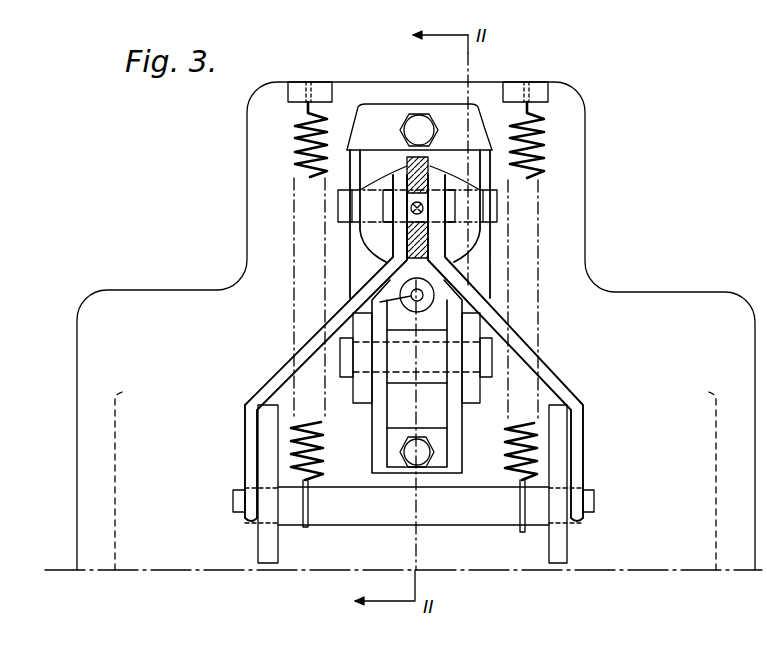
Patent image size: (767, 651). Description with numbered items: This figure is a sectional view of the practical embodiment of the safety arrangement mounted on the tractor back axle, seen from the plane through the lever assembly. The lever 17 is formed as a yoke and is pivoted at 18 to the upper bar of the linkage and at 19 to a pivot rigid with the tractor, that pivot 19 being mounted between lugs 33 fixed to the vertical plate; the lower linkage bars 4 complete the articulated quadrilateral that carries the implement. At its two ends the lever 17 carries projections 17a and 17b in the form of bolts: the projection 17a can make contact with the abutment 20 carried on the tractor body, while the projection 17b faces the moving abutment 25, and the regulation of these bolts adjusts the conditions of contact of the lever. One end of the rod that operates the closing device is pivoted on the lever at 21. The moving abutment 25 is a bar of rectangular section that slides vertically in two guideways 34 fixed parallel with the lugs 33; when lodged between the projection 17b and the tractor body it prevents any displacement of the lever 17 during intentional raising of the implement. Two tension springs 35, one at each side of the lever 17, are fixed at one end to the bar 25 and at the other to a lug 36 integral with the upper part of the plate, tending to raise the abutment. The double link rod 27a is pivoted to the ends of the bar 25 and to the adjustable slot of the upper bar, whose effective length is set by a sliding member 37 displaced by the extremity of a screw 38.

The lower linkage bars 4 is at (405, 172).
The lever 17 is at (352, 230).
The projection 17a is at (418, 118).
The projection 17b is at (430, 452).
The pivot 18 is at (497, 204).
The pivot 19 is at (470, 362).
The abutment 20 is at (653, 303).
The pivot 21 is at (412, 292).
The moving abutment 25 is at (368, 510).
The link rod 27a is at (296, 352).
The lugs 33 is at (472, 332).
The guideways 34 is at (558, 449).
The tension springs 35 is at (296, 135).
The lug 36 is at (322, 88).
The sliding member 37 is at (410, 207).
The screw 38 is at (422, 203).